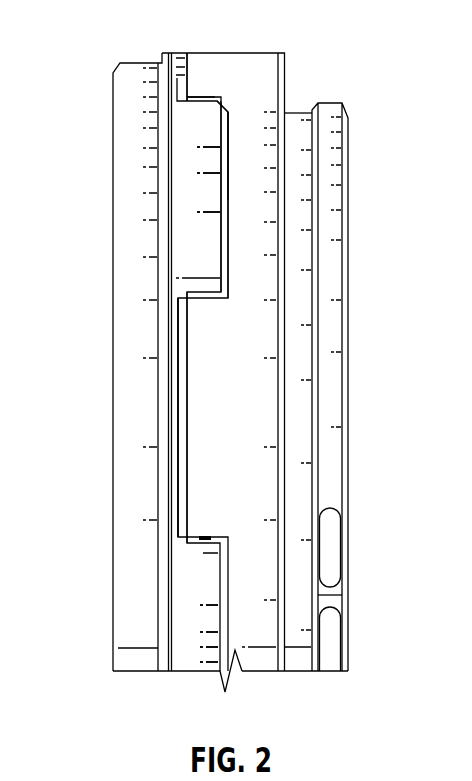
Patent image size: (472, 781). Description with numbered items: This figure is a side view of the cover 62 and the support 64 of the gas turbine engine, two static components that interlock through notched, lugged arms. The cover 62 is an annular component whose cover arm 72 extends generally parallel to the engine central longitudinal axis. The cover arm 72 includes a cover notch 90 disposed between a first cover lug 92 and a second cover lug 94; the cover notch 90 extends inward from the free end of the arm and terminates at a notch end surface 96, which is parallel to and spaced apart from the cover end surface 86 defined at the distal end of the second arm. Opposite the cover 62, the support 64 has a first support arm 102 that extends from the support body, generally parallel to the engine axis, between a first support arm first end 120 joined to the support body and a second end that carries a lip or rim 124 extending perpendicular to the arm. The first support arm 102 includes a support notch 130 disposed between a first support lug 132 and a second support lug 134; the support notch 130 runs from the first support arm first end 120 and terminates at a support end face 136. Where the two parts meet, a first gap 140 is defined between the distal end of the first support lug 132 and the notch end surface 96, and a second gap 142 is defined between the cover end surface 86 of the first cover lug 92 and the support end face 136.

The cover 62 is at (92, 146).
The support 64 is at (303, 96).
The cover arm 72 is at (137, 661).
The cover end surface 86 is at (221, 150).
The cover notch 90 is at (163, 406).
The first cover lug 92 is at (193, 203).
The second cover lug 94 is at (184, 617).
The notch end surface 96 is at (178, 340).
The first support arm 102 is at (261, 659).
The first support arm first end 120 is at (188, 70).
The rim 124 is at (284, 52).
The support notch 130 is at (236, 252).
The first support lug 132 is at (253, 413).
The second support lug 134 is at (210, 78).
The support end face 136 is at (228, 210).
The first gap 140 is at (183, 500).
The second gap 142 is at (228, 168).